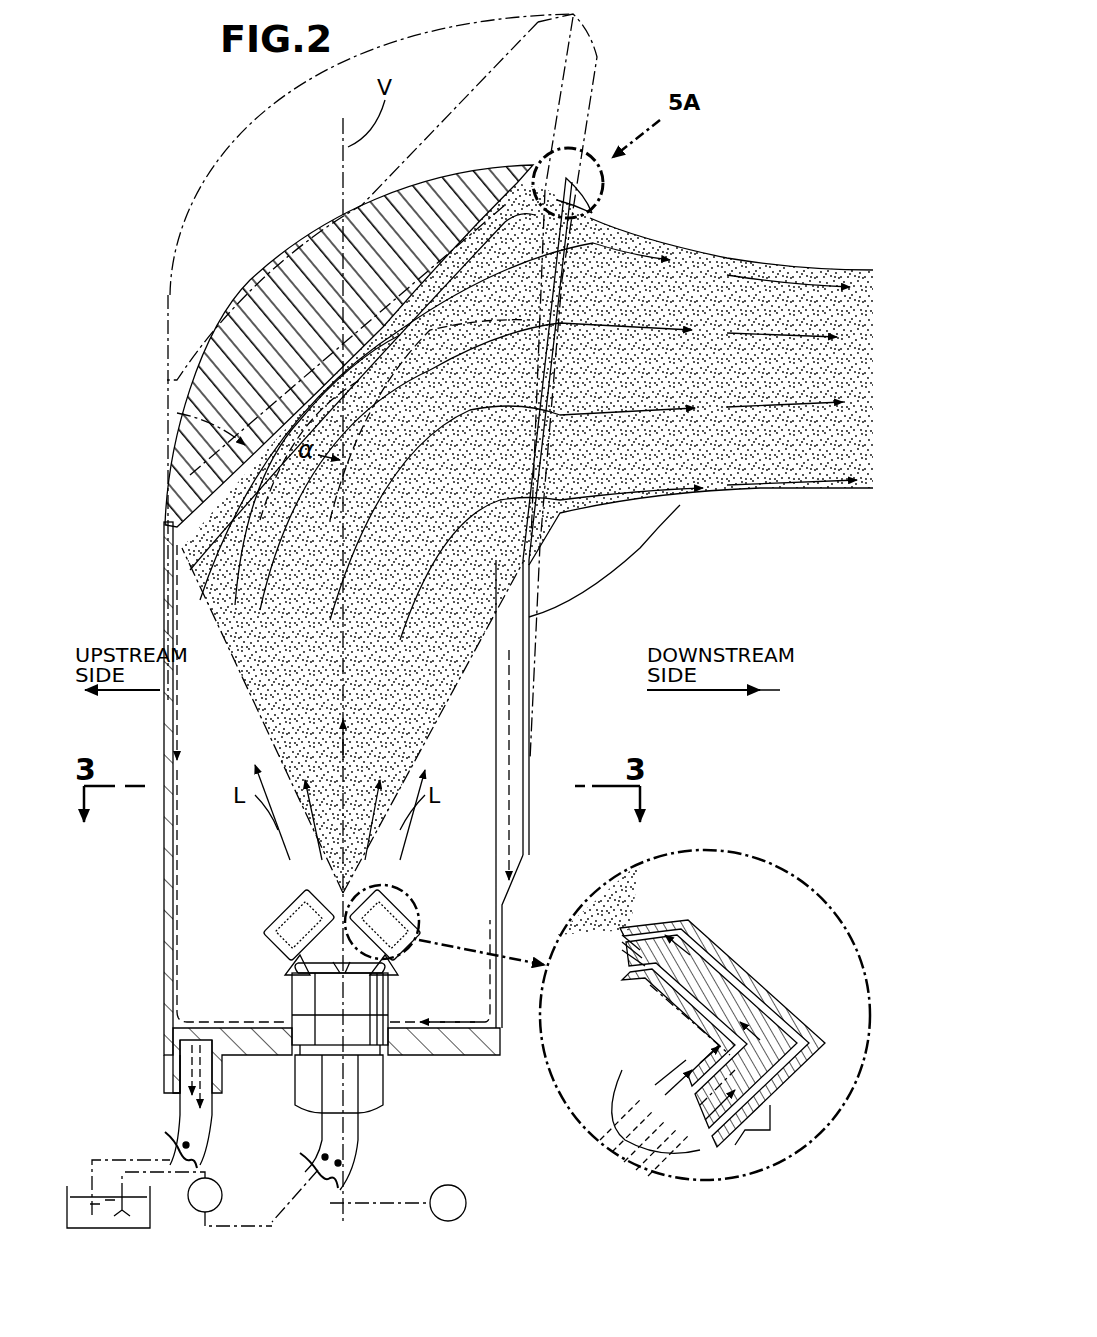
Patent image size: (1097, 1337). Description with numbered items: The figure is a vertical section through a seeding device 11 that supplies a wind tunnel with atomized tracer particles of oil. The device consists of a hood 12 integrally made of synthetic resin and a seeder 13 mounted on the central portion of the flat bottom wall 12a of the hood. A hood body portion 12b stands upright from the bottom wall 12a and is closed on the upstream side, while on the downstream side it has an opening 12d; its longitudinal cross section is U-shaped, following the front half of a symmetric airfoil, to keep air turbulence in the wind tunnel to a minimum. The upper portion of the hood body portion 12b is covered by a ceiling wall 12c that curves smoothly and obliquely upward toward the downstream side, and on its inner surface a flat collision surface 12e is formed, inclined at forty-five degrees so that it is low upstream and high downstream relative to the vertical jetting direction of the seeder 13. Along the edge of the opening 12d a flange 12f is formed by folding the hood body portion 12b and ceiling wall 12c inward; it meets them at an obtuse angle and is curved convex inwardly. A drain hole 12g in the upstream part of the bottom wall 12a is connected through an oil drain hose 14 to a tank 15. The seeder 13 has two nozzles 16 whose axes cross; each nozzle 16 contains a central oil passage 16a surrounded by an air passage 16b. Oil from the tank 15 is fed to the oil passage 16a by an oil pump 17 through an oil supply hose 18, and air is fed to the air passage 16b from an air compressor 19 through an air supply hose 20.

The seeding device 11 is at (575, 655).
The hood 12 is at (230, 150).
The bottom wall 12a is at (445, 1055).
The hood body portion 12b is at (164, 893).
The ceiling wall 12c is at (288, 277).
The opening 12d is at (530, 722).
The collision surface 12e is at (383, 332).
The flange 12f is at (588, 185).
The drain hole 12g is at (195, 1028).
The seeder 13 is at (370, 1011).
The oil drain hose 14 is at (128, 1160).
The tank 15 is at (150, 1220).
The nozzle 16 is at (285, 915).
The oil passage 16a is at (660, 1005).
The air passage 16b is at (712, 978).
The oil pump 17 is at (218, 1180).
The oil supply hose 18 is at (290, 1205).
The air compressor 19 is at (467, 1200).
The air supply hose 20 is at (380, 1203).